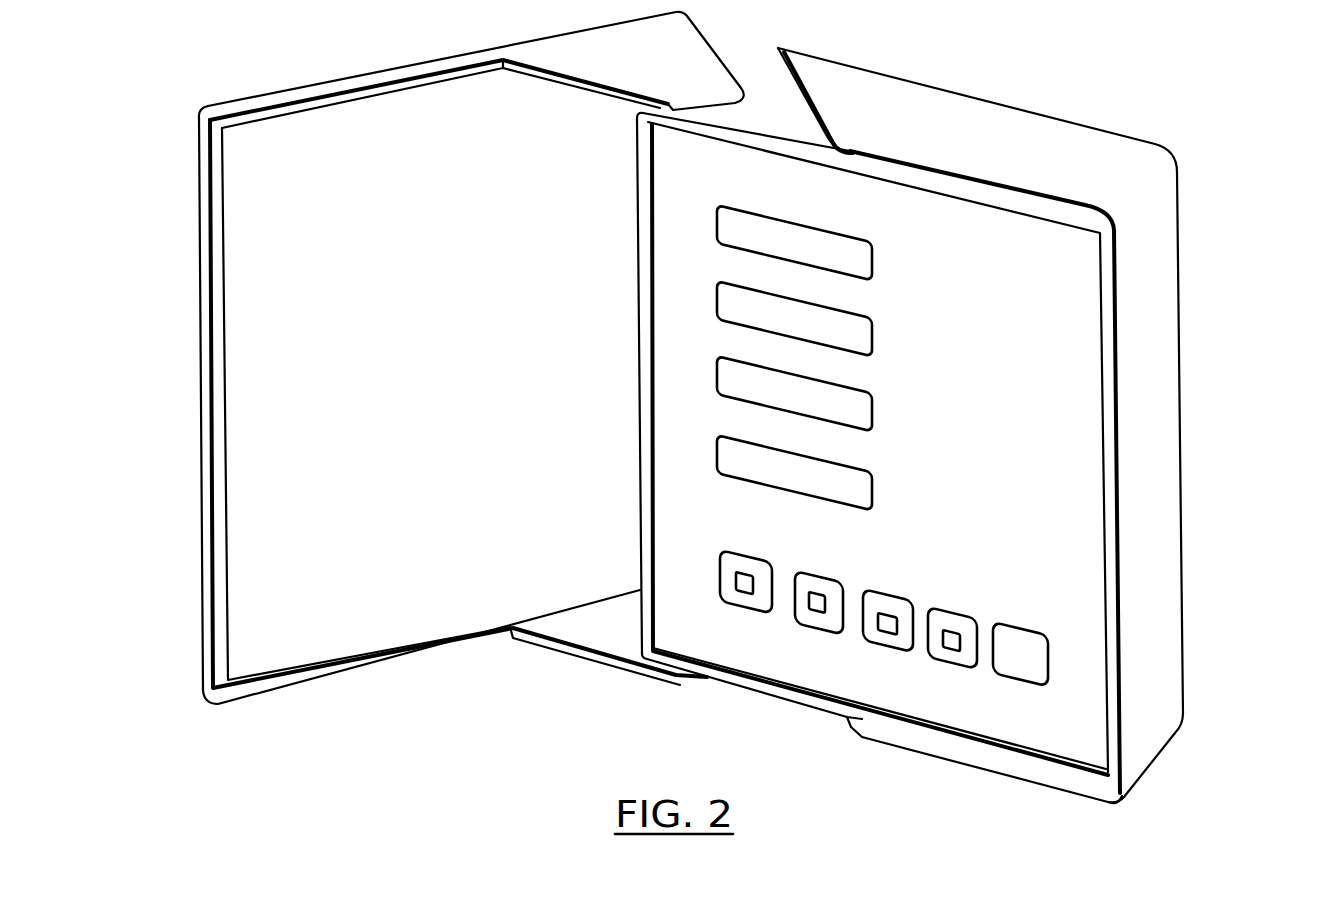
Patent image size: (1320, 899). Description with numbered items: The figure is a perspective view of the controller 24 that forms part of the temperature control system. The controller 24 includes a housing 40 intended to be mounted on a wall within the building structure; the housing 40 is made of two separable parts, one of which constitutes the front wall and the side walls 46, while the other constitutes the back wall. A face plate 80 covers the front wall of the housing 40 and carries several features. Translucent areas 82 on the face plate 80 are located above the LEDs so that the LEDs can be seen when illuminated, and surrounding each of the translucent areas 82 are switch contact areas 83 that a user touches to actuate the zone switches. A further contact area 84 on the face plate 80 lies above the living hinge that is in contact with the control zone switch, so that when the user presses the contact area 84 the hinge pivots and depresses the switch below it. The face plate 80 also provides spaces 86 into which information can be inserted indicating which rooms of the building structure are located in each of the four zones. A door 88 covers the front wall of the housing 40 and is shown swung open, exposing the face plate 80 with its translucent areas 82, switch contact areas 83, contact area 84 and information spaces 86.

The controller 24 is at (1240, 111).
The housing 40 is at (1143, 298).
The side walls 46 is at (916, 102).
The face plate 80 is at (1017, 383).
The translucent areas 82 is at (746, 577).
The switch contact areas 83 is at (818, 598).
The contact area 84 is at (1020, 678).
The spaces 86 is at (862, 252).
The door 88 is at (410, 357).